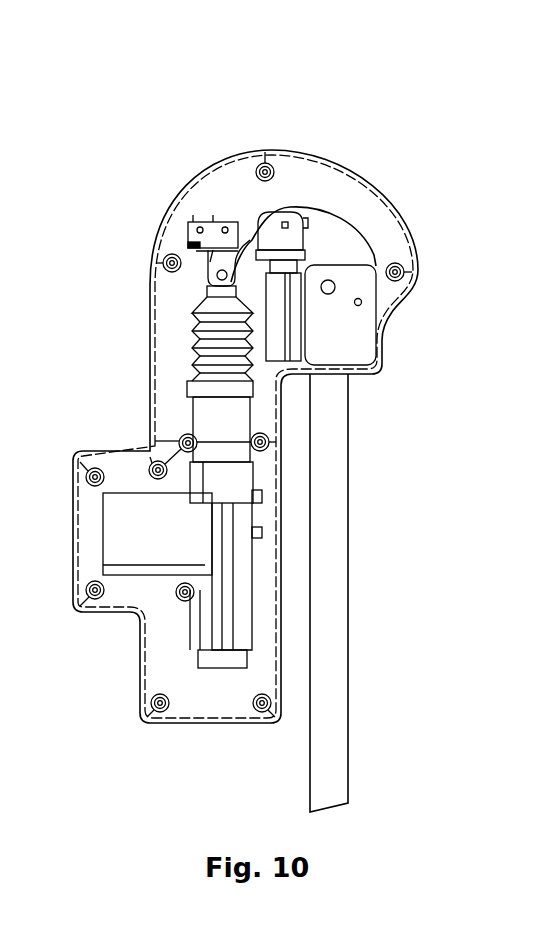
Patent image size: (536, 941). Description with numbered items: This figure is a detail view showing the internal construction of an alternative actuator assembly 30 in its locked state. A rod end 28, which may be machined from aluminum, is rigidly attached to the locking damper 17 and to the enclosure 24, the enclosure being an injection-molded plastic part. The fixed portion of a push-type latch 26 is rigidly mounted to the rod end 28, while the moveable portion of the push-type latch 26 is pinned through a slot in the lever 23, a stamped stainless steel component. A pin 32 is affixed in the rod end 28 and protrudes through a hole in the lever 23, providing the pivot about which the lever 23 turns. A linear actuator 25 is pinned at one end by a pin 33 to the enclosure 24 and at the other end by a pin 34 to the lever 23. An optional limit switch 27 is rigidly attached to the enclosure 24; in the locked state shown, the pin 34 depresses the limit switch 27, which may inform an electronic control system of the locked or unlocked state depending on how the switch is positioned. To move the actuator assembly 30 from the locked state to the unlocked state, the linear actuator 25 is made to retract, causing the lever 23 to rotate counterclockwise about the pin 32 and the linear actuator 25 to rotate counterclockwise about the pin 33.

The locking damper 17 is at (348, 585).
The lever 23 is at (327, 217).
The enclosure 24 is at (287, 150).
The linear actuator 25 is at (192, 347).
The push-type latch 26 is at (277, 320).
The limit switch 27 is at (205, 222).
The rod end 28 is at (340, 327).
The actuator assembly 30 is at (132, 766).
The pin 32 is at (360, 297).
The pin 33 is at (217, 272).
The pin 34 is at (287, 227).